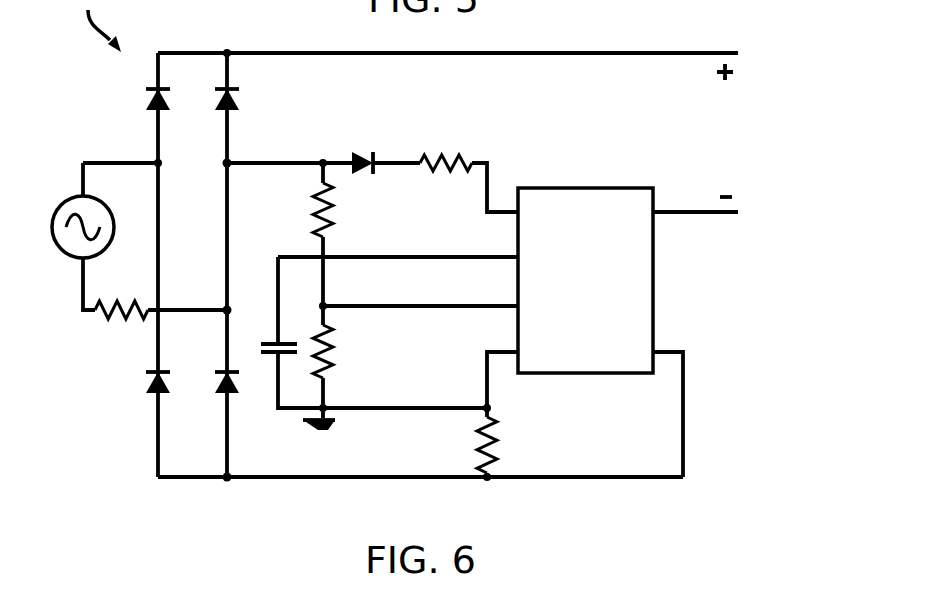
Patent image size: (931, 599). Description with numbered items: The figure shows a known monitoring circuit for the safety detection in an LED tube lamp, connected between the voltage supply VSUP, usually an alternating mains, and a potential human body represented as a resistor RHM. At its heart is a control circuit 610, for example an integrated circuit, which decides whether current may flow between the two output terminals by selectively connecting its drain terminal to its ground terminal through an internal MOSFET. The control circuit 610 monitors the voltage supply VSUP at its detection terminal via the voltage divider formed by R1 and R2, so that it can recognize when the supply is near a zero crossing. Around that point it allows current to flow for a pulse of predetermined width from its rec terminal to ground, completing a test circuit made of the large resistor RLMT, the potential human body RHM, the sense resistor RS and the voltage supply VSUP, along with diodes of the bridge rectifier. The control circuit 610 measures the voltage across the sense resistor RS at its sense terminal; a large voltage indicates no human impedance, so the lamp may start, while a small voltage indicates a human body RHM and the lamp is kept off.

The control circuit 610 is at (588, 188).
The voltage divider resistor R1 is at (301, 212).
The voltage divider resistor R2 is at (342, 355).
The sense resistor RS is at (506, 445).
The large resistor RLMT is at (447, 148).
The potential human body RHM is at (110, 330).
The voltage supply VSUP is at (61, 206).